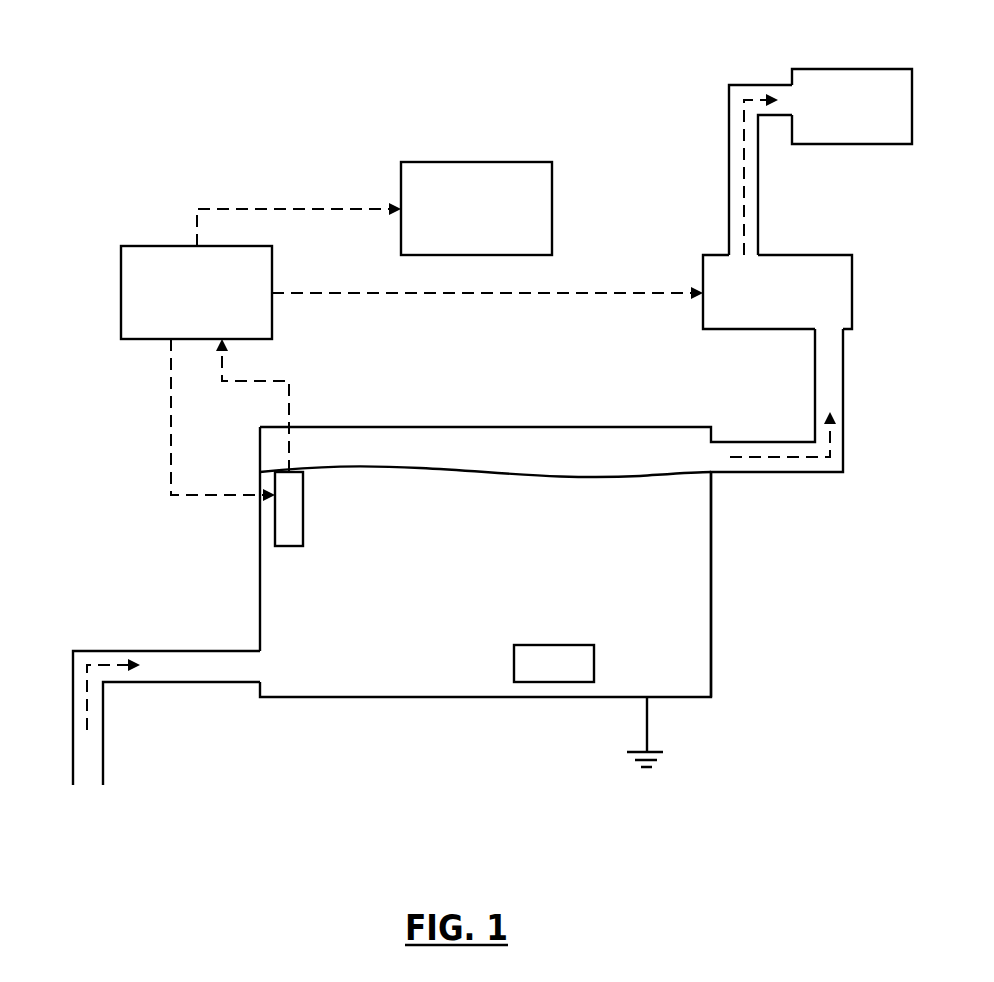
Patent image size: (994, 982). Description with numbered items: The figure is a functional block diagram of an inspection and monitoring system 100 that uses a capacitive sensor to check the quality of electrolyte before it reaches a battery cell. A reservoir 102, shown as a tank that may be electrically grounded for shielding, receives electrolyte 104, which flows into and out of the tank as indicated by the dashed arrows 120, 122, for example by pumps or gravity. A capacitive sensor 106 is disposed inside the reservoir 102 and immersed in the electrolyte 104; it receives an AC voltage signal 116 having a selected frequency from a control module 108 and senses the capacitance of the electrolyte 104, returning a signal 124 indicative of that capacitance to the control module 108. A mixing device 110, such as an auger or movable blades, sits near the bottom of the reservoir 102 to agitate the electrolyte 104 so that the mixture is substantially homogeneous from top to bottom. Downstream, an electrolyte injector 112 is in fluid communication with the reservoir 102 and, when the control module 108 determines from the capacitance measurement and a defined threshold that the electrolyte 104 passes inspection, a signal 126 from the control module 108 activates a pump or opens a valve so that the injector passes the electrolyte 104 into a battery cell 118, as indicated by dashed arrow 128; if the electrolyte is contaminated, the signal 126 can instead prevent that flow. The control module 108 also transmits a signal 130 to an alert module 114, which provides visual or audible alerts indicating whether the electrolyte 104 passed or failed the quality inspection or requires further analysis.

The inspection and monitoring system 100 is at (312, 35).
The reservoir 102 is at (544, 425).
The electrolyte 104 is at (541, 556).
The capacitive sensor 106 is at (303, 513).
The control module 108 is at (168, 246).
The mixing device 110 is at (514, 656).
The electrolyte injector 112 is at (703, 278).
The alert module 114 is at (456, 162).
The AC voltage signal 116 is at (201, 420).
The battery cell 118 is at (805, 69).
The dashed arrow (electrolyte input flow) 120 is at (145, 718).
The dashed arrow (electrolyte output flow) 122 is at (777, 513).
The signal 124 is at (255, 405).
The signal 126 is at (487, 305).
The dashed arrow (injection flow) 128 is at (740, 170).
The signal 130 is at (299, 211).